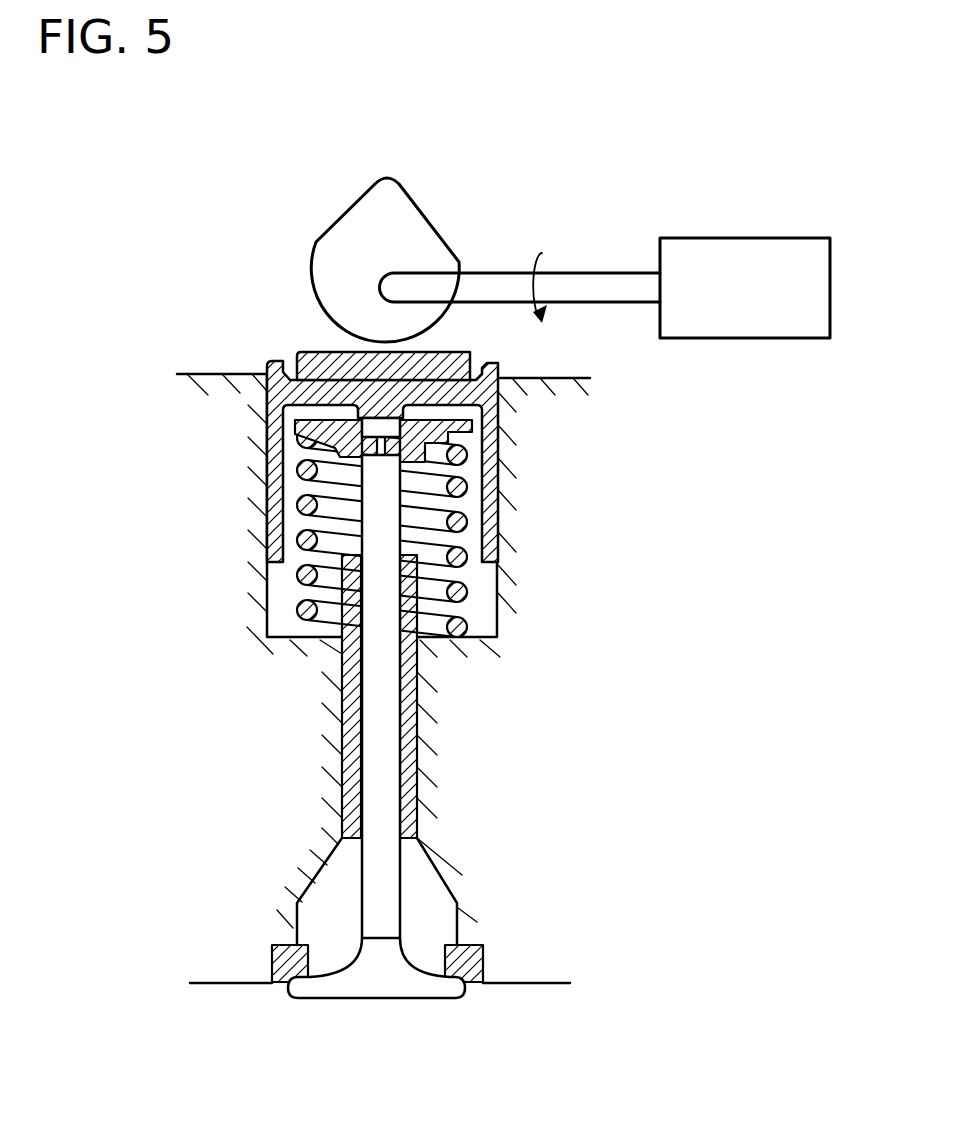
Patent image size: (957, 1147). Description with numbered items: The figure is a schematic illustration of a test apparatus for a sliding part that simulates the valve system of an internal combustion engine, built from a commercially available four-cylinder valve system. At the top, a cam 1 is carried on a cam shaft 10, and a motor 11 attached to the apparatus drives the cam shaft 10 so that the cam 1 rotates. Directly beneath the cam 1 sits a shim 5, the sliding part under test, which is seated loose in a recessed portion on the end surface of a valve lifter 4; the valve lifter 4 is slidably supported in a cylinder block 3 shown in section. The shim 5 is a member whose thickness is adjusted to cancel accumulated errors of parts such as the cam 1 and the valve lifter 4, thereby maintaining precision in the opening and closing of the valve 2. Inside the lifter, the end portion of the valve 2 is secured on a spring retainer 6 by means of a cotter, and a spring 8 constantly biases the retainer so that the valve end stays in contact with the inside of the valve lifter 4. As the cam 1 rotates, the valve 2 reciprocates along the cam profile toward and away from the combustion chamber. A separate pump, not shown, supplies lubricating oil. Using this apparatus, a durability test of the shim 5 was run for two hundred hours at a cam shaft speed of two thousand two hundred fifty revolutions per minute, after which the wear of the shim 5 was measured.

The cam 1 is at (360, 223).
The valve 2 is at (393, 968).
The cylinder block 3 is at (217, 374).
The valve lifter 4 is at (483, 392).
The shim 5 is at (317, 357).
The spring retainer 6 is at (322, 444).
The spring 8 is at (300, 612).
The cam shaft 10 is at (482, 272).
The motor 11 is at (757, 238).